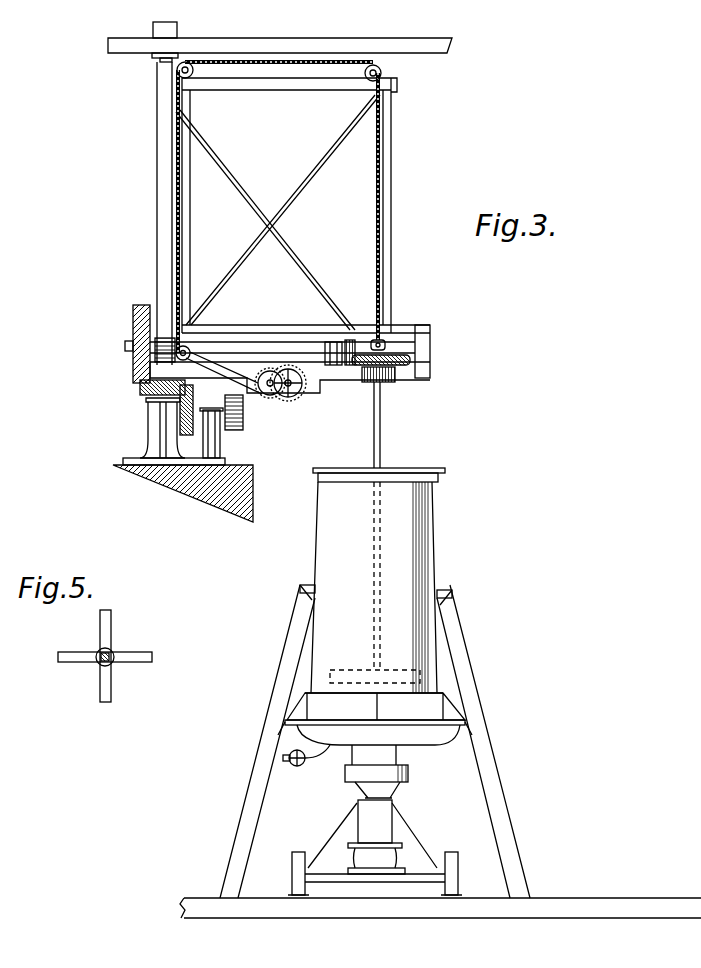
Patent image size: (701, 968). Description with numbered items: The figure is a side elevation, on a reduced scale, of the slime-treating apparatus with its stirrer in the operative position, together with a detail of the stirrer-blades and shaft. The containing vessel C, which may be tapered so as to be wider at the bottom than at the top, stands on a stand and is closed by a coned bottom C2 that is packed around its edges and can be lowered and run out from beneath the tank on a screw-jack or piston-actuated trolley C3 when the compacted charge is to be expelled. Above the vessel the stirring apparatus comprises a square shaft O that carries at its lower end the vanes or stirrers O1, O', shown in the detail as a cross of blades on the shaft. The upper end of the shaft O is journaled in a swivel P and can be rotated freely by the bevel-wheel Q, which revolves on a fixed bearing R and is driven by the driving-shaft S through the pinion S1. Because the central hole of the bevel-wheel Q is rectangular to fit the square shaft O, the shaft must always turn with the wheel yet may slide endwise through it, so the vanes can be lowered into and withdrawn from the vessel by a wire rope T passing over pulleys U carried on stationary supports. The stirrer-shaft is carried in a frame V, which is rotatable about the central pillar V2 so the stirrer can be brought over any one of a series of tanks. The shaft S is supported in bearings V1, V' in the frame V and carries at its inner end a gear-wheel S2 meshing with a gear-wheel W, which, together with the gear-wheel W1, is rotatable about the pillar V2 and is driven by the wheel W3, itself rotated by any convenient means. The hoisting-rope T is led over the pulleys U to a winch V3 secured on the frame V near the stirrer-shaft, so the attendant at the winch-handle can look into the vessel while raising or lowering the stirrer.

In FIG. 3, the wire rope T is at (273, 66).
In FIG. 3, the pulleys U is at (383, 72).
In FIG. 3, the frame V is at (303, 228).
In FIG. 3, the bearings V1 is at (165, 330).
In FIG. 3, the central pillar V2 is at (158, 228).
In FIG. 3, the winch V3 is at (246, 388).
In FIG. 3, the bearings V' is at (333, 372).
In FIG. 3, the driving-shaft S is at (272, 352).
In FIG. 3, the pinion S1 is at (352, 342).
In FIG. 3, the gear-wheel S2 is at (133, 346).
In FIG. 3, the swivel P is at (384, 348).
In FIG. 3, the bevel-wheel Q is at (411, 359).
In FIG. 3, the fixed bearing R is at (386, 381).
In FIG. 3, the square shaft O is at (398, 425).
In FIG. 5, the square shaft O is at (92, 643).
In FIG. 3, the vanes O1 is at (345, 670).
In FIG. 5, the vanes O' is at (105, 656).
In FIG. 3, the containing vessel C is at (328, 547).
In FIG. 3, the coned bottom C2 is at (410, 748).
In FIG. 3, the trolley C3 is at (396, 790).
In FIG. 3, the gear-wheel W is at (186, 387).
In FIG. 3, the gear-wheel W1 is at (141, 392).
In FIG. 3, the wheel W3 is at (190, 432).